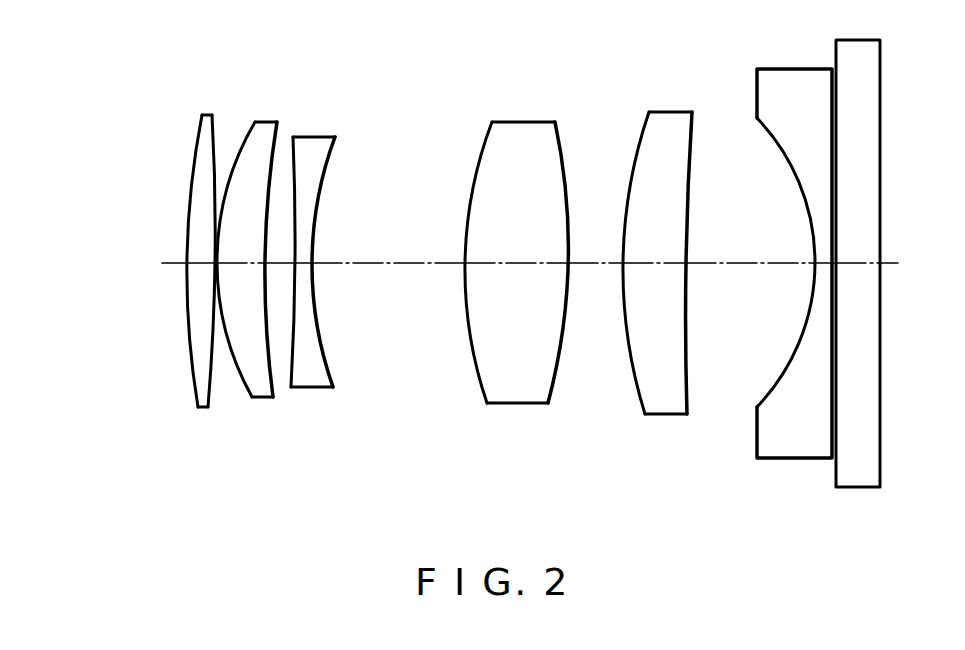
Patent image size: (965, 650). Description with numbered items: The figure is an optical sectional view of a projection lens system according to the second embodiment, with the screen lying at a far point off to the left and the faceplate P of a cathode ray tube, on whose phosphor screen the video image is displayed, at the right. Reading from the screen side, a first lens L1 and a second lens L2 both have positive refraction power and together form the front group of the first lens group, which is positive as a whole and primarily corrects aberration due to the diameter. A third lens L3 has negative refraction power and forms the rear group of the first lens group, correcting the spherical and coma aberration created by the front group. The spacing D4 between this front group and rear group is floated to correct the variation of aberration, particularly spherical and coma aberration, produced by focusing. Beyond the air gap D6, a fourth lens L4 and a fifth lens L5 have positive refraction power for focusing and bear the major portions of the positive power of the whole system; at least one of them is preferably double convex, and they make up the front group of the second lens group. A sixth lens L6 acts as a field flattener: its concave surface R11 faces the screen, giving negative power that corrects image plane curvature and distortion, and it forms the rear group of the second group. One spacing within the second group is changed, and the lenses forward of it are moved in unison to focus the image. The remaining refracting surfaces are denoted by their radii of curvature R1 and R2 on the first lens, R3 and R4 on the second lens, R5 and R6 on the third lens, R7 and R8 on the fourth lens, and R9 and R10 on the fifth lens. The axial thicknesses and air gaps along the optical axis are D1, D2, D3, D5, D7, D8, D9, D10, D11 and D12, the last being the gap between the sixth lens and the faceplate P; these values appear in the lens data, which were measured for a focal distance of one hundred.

The radius of curvature of lens plane R1 is at (198, 130).
The radius of curvature of lens plane R2 is at (216, 122).
The radius of curvature of lens plane R3 is at (251, 133).
The radius of curvature of lens plane R4 is at (276, 128).
The radius of curvature of lens plane R5 is at (291, 145).
The radius of curvature of lens plane R6 is at (333, 155).
The radius of curvature of lens plane R7 is at (482, 145).
The radius of curvature of lens plane R8 is at (557, 132).
The radius of curvature of lens plane R9 is at (640, 137).
The radius of curvature of lens plane R10 is at (693, 130).
The radius of curvature of lens plane R11 is at (772, 138).
The thickness between lens planes D1 is at (199, 264).
The air gap between lens planes D2 is at (212, 265).
The thickness between lens planes D3 is at (245, 264).
The spacing between front group and rear group of first lens group D4 is at (284, 266).
The thickness between lens planes D5 is at (305, 265).
The air gap between lens planes D6 is at (403, 264).
The thickness between lens planes D7 is at (522, 264).
The air gap between lens planes D8 is at (597, 264).
The thickness between lens planes D9 is at (660, 264).
The air gap between lens planes D10 is at (733, 264).
The thickness between lens planes D11 is at (822, 270).
The air gap between lens planes D12 is at (834, 272).
The first lens L1 is at (184, 268).
The second lens L2 is at (260, 268).
The third lens L3 is at (341, 268).
The fourth lens L4 is at (514, 268).
The fifth lens L5 is at (665, 268).
The sixth lens L6 is at (778, 284).
The faceplate P is at (862, 488).